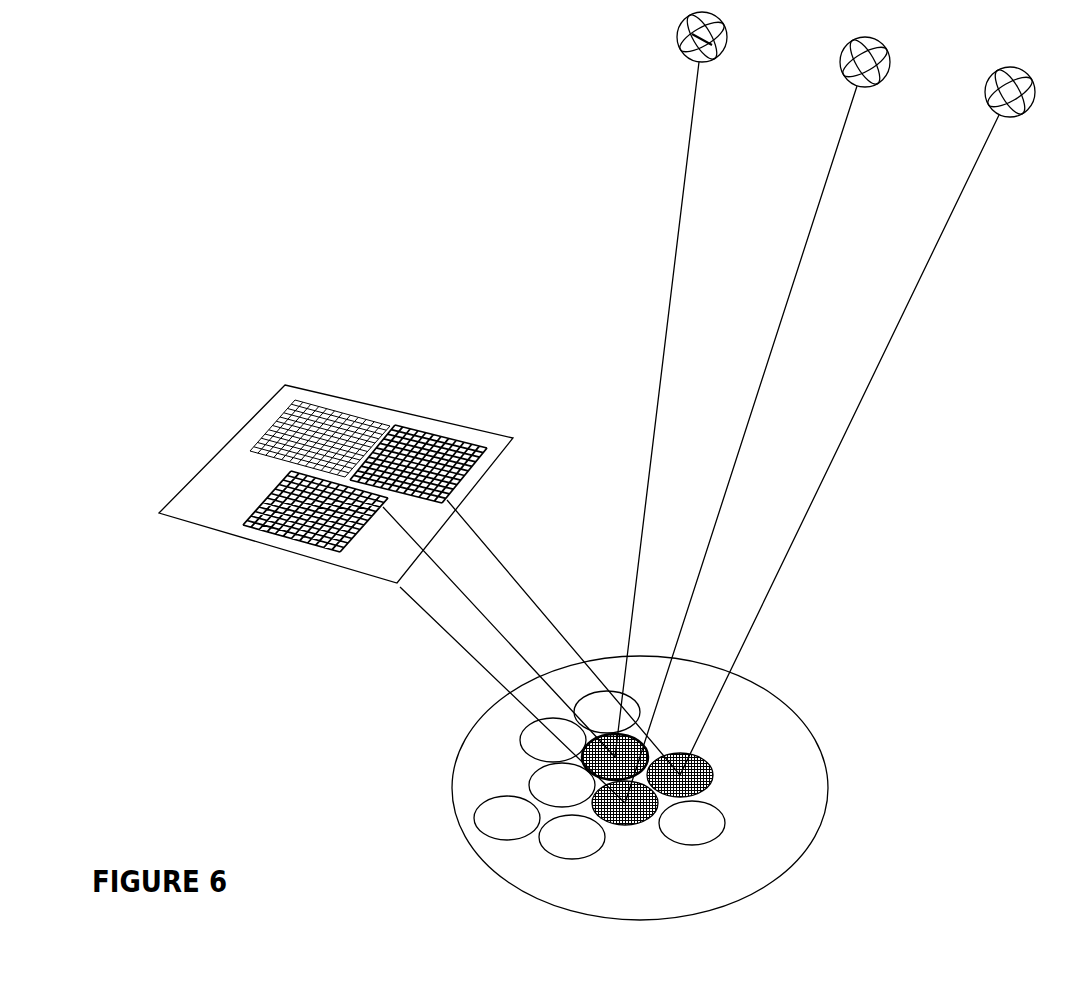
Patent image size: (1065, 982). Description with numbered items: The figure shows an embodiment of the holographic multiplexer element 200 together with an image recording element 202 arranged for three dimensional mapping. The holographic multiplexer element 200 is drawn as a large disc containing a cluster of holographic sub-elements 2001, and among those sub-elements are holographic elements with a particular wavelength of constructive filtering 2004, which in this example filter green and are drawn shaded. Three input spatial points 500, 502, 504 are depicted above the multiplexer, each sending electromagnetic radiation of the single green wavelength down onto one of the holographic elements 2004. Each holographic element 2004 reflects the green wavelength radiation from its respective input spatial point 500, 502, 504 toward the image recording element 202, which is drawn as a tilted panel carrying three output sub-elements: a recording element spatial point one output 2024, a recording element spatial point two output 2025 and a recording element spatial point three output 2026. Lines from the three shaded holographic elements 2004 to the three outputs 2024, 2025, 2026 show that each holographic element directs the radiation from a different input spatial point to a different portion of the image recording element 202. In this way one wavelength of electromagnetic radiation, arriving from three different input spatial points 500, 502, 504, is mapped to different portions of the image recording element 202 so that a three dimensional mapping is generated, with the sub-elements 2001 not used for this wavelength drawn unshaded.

The holographic multiplexer element 200 is at (770, 862).
The holographic sub-element 2001 is at (558, 845).
The holographic element with a particular wavelength of constructive filtering 2004 is at (647, 743).
The image recording element 202 is at (185, 512).
The recording element spatial point one output 2024 is at (267, 440).
The recording element spatial point two output 2025 is at (247, 513).
The recording element spatial point three output 2026 is at (397, 423).
The input spatial point 500 is at (700, 38).
The input spatial point 502 is at (860, 72).
The input spatial point 504 is at (1005, 103).